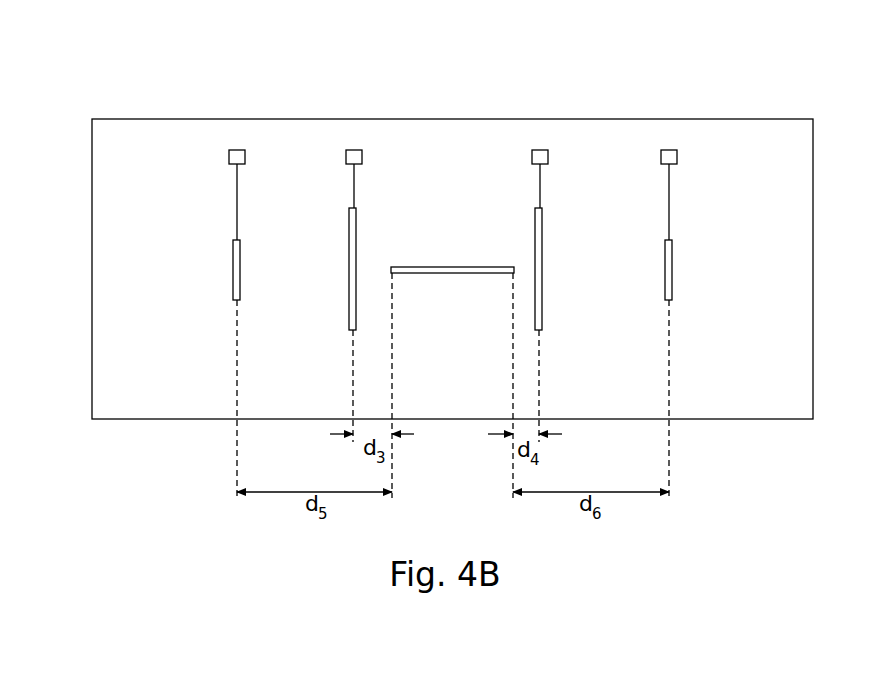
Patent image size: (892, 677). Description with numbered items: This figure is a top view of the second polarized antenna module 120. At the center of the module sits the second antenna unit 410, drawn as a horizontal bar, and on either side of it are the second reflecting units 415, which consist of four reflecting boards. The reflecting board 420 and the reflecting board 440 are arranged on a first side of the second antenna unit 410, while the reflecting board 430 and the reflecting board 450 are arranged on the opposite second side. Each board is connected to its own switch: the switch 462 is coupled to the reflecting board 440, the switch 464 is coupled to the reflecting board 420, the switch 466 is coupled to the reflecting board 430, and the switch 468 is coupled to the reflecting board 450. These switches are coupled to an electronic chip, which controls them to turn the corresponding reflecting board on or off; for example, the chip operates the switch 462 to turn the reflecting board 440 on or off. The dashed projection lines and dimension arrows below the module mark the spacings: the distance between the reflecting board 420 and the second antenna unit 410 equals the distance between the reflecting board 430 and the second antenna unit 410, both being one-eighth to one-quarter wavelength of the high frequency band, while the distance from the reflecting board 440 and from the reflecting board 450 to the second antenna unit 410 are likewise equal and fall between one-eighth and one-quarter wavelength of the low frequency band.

The second polarized antenna module 120 is at (35, 40).
The second antenna unit 410 is at (415, 267).
The second reflecting units 415 is at (412, 243).
The reflecting board 420 is at (349, 258).
The reflecting board 430 is at (535, 258).
The reflecting board 440 is at (233, 260).
The reflecting board 450 is at (665, 260).
The switch 462 is at (237, 150).
The switch 464 is at (354, 150).
The switch 466 is at (540, 150).
The switch 468 is at (669, 150).